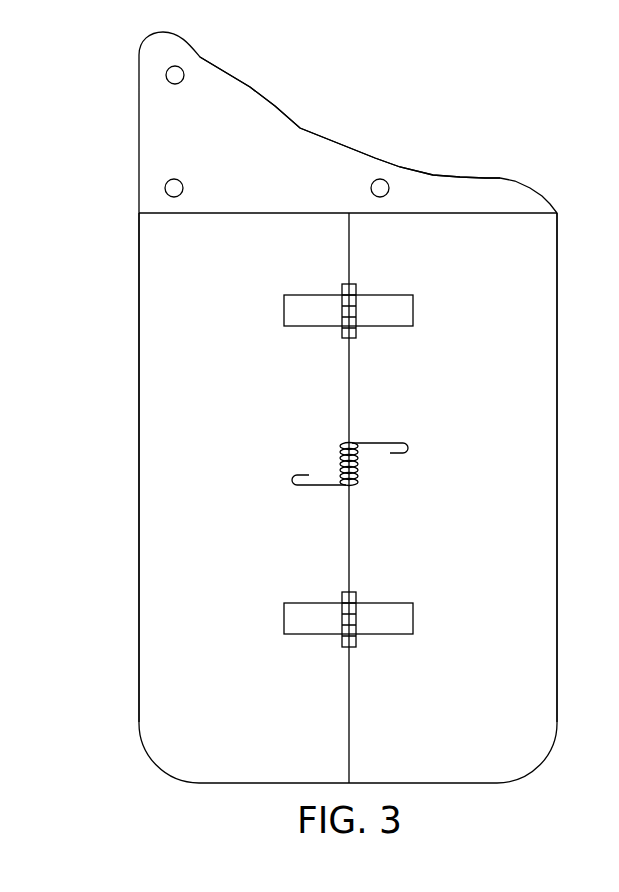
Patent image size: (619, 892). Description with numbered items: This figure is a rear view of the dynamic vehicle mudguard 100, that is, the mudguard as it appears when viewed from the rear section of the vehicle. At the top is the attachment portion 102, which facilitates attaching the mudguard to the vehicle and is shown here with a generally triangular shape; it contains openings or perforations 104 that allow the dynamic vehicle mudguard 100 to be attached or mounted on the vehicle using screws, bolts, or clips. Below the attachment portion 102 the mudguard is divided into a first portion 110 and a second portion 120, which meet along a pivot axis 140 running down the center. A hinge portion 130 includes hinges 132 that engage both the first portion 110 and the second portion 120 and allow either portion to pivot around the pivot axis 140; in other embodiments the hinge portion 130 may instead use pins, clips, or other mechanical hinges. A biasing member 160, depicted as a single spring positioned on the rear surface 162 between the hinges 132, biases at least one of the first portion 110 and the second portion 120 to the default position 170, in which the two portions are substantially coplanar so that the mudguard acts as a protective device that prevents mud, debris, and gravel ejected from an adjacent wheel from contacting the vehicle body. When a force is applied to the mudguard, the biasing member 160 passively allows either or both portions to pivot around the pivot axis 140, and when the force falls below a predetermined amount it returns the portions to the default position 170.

The dynamic vehicle mudguard 100 is at (442, 117).
The attachment portion 102 is at (300, 128).
The openings or perforations 104 is at (178, 84).
The first portion 110 is at (558, 340).
The second portion 120 is at (139, 340).
The hinge portion 130 is at (341, 512).
The hinges 132 is at (310, 338).
The pivot axis 140 is at (349, 695).
The biasing member 160 is at (365, 433).
The rear surface 162 is at (540, 590).
The default position 170 is at (565, 250).